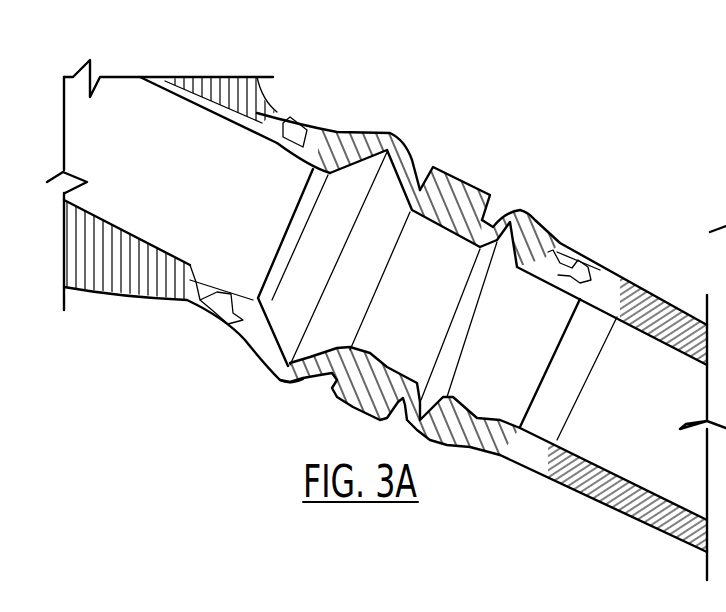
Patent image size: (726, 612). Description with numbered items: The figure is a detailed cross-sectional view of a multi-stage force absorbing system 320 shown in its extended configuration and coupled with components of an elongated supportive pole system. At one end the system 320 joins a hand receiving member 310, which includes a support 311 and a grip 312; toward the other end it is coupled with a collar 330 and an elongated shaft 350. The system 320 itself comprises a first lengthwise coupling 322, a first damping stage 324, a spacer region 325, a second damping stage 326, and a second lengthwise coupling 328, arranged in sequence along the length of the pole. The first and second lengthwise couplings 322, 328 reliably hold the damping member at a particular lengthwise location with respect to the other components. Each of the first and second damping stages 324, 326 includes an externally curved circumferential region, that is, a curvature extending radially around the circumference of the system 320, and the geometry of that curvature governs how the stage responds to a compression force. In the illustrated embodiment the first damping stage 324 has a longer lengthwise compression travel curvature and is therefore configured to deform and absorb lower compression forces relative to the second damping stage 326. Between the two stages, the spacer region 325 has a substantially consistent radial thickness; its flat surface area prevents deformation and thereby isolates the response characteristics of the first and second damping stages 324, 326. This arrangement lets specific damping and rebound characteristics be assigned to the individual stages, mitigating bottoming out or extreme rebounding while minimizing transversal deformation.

The hand receiving member 310 is at (206, 372).
The support 311 is at (193, 300).
The grip 312 is at (125, 272).
The multi-stage force absorbing system 320 is at (572, 167).
The first lengthwise coupling 322 is at (293, 128).
The first damping stage 324 is at (380, 132).
The spacer region 325 is at (453, 198).
The second damping stage 326 is at (523, 227).
The second lengthwise coupling 328 is at (590, 272).
The collar 330 is at (528, 448).
The elongated shaft 350 is at (593, 430).